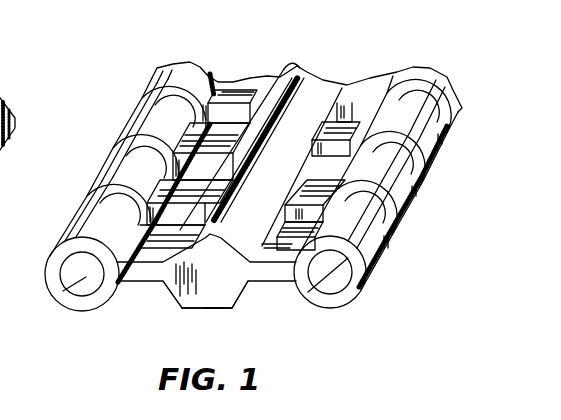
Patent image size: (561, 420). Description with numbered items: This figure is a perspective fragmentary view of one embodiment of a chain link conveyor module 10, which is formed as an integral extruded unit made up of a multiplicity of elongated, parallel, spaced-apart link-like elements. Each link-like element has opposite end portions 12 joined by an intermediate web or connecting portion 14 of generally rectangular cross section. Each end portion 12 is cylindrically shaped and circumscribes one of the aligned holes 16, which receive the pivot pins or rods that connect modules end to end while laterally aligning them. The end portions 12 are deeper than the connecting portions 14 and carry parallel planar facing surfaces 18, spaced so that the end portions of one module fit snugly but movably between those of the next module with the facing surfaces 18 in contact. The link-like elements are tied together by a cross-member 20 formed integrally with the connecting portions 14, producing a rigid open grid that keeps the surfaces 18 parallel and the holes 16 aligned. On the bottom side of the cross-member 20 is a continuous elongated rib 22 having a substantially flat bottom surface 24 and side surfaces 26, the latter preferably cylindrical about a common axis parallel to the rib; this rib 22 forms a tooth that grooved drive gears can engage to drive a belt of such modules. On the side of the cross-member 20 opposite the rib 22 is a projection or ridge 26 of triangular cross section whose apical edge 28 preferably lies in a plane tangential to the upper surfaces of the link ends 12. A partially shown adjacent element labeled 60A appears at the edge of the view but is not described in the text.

The module 10 is at (307, 141).
The end portion 12 is at (45, 280).
The connecting portion 14 is at (238, 82).
The hole 16 is at (85, 278).
The facing surface 18 is at (147, 97).
The cross-member 20 is at (328, 75).
The rib 22 is at (215, 311).
The bottom surface 24 is at (190, 310).
The side surface 26 is at (222, 256).
The apical edge 28 is at (303, 72).
The adjacent member 60A is at (19, 158).